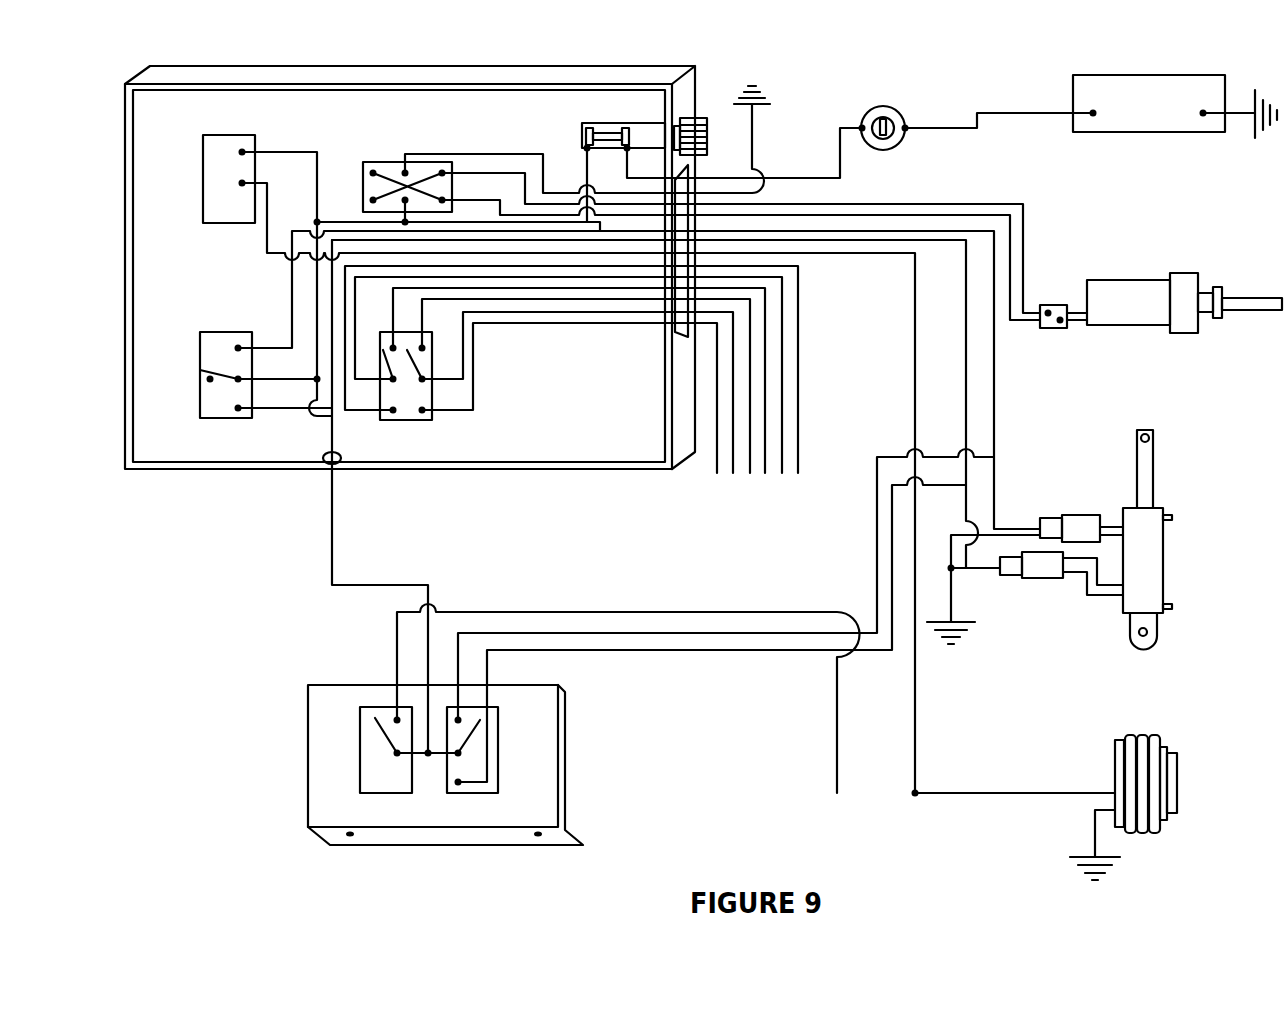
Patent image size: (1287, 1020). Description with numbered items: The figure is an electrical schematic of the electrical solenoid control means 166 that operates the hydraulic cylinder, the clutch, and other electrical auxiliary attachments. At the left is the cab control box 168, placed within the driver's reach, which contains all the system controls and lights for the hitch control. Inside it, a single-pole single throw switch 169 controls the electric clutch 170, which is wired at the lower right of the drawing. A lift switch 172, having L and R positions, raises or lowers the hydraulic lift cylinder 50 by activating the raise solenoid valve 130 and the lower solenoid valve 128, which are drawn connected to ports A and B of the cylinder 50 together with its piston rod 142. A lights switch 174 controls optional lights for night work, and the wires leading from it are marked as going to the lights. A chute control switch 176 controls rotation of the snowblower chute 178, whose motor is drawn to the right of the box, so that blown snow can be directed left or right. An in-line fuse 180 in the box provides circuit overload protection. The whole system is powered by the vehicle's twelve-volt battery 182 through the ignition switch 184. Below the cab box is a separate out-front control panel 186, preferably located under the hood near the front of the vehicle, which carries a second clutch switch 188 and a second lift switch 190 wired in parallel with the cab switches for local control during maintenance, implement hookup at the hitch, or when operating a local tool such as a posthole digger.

The hydraulic lift cylinder 50 is at (1157, 562).
The lower solenoid valve 128 is at (1078, 515).
The raise solenoid valve 130 is at (1042, 578).
The piston rod 142 is at (1148, 482).
The electrical solenoid control means 166 is at (322, 622).
The cab control box 168 is at (167, 453).
The single-pole single throw switch 169 is at (243, 208).
The electric clutch 170 is at (1150, 732).
The lift switch 172 is at (210, 392).
The lights switch 174 is at (405, 405).
The chute control switch 176 is at (400, 166).
The snowblower chute 178 is at (1107, 287).
The in-line fuse 180 is at (647, 128).
The battery 182 is at (1135, 125).
The ignition switch 184 is at (902, 110).
The out-front control panel 186 is at (532, 800).
The second clutch switch 188 is at (375, 768).
The second lift switch 190 is at (492, 727).